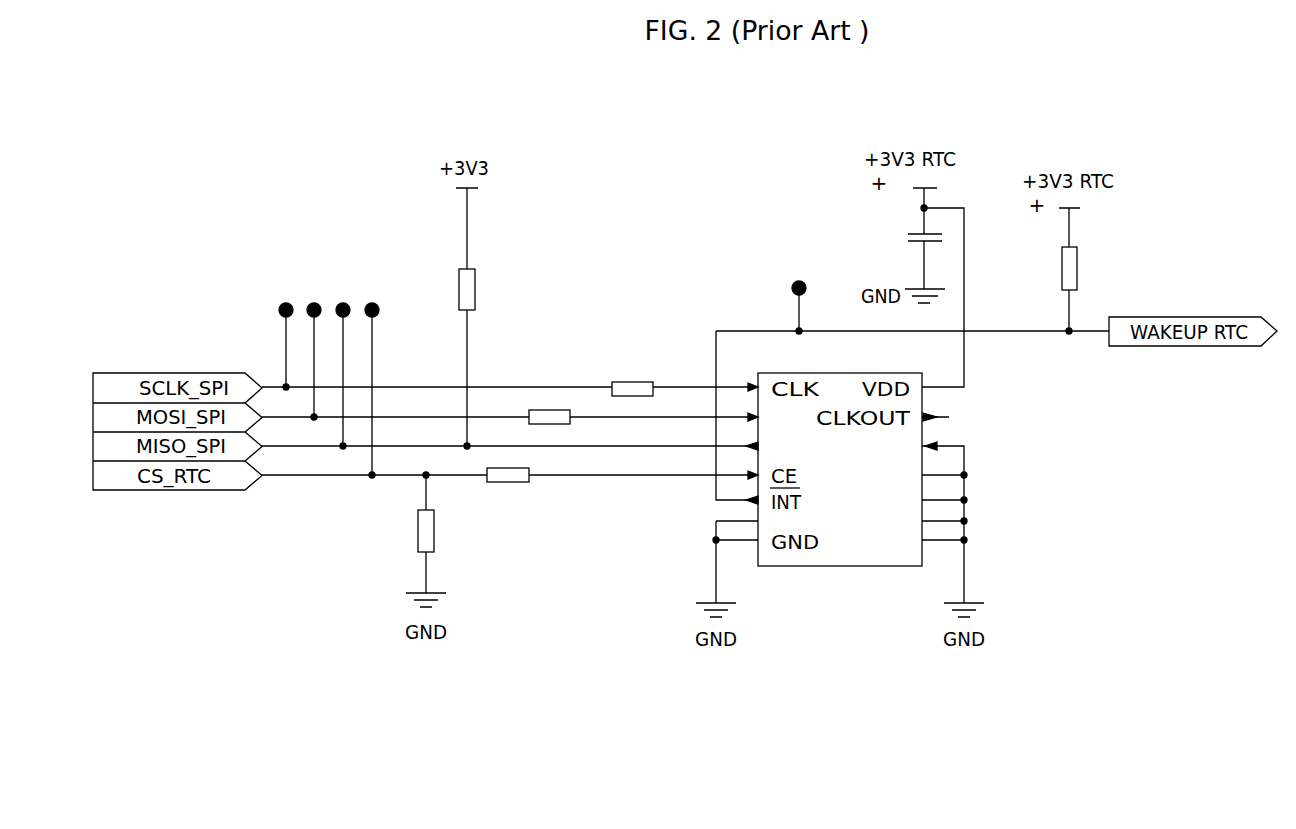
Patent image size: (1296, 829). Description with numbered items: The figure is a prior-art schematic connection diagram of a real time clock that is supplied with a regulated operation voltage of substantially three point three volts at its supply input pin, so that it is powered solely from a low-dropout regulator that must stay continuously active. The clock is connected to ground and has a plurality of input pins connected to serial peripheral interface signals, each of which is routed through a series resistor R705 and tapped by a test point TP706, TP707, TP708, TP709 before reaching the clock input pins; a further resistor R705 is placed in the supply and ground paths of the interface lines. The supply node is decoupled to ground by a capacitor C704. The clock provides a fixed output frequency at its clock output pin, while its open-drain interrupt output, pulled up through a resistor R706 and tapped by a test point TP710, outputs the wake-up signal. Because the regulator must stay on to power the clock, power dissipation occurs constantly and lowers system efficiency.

The test point for SCLK_SPI TP706 is at (285, 316).
The test point for MOSI_SPI TP707 is at (313, 331).
The test point for MISO_SPI TP708 is at (342, 345).
The test point for CS_RTC TP709 is at (371, 360).
The test point for INT / WAKEUP RTC TP710 is at (772, 307).
The resistor R705 is at (513, 390).
The pull-up resistor R706 is at (1094, 271).
The capacitor C704 is at (901, 238).